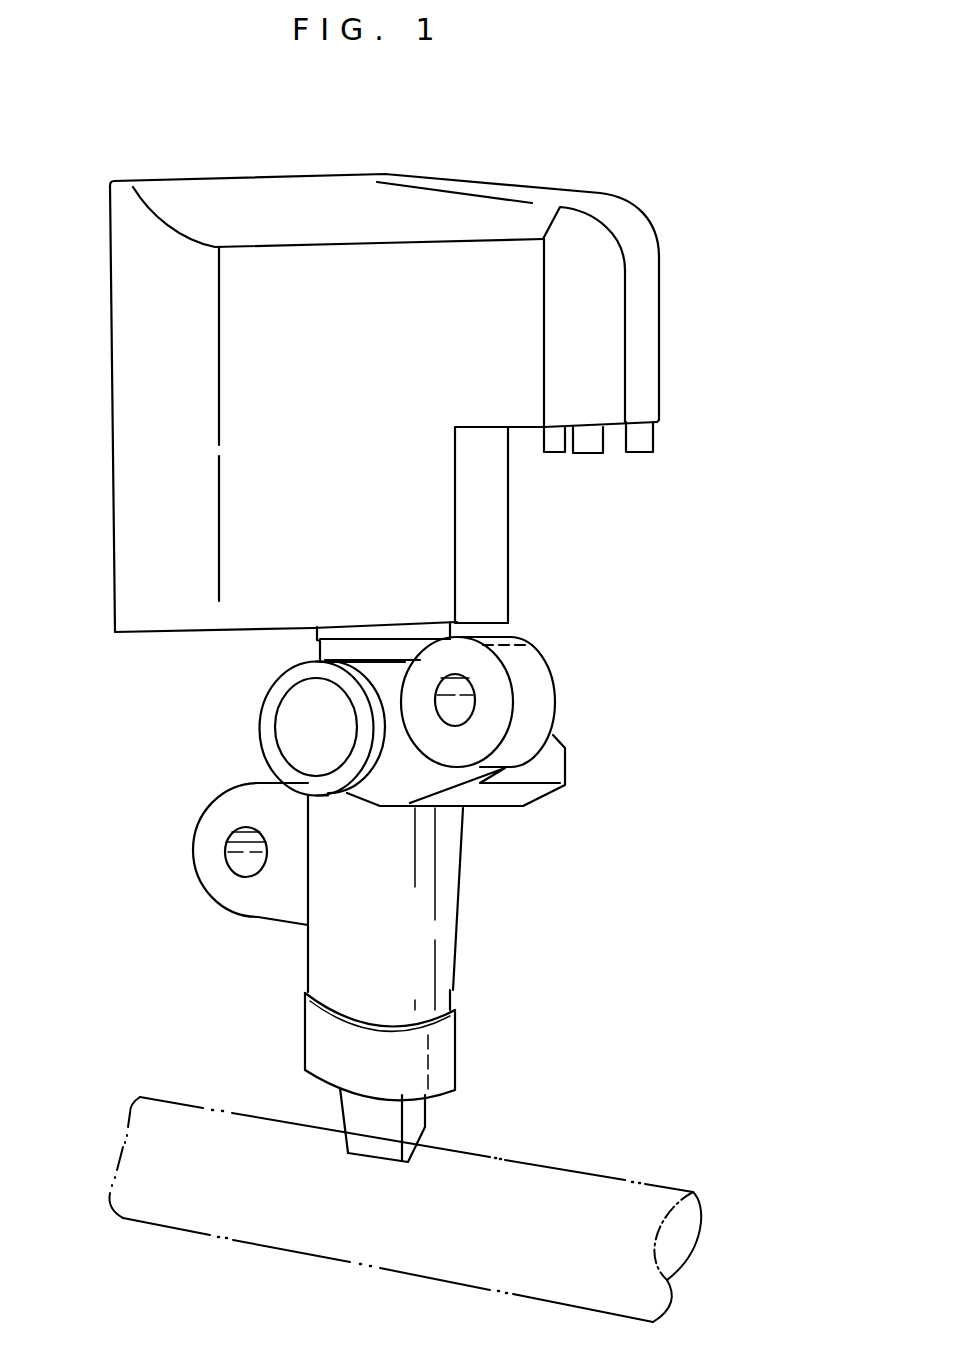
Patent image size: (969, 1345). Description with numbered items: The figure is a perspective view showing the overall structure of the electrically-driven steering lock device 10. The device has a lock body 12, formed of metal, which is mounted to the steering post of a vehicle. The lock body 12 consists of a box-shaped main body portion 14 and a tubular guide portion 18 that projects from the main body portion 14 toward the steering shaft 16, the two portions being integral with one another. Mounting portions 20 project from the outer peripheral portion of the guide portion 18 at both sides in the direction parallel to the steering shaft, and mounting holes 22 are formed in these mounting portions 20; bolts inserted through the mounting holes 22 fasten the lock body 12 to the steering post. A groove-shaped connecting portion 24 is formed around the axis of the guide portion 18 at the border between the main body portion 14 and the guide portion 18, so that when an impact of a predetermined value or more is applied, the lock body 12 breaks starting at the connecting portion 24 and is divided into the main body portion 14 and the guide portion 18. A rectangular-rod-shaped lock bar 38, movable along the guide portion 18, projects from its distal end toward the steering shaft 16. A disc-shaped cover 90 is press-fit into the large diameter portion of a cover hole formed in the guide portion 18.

The electrically-driven steering lock device 10 is at (723, 521).
The lock body 12 is at (108, 603).
The main body portion 14 is at (112, 448).
The steering shaft 16 is at (568, 1167).
The guide portion 18 is at (455, 953).
The mounting portions 20 is at (552, 696).
The mounting holes 22 is at (467, 710).
The connecting portion 24 is at (316, 645).
The lock bar 38 is at (352, 1105).
The cover 90 is at (287, 728).